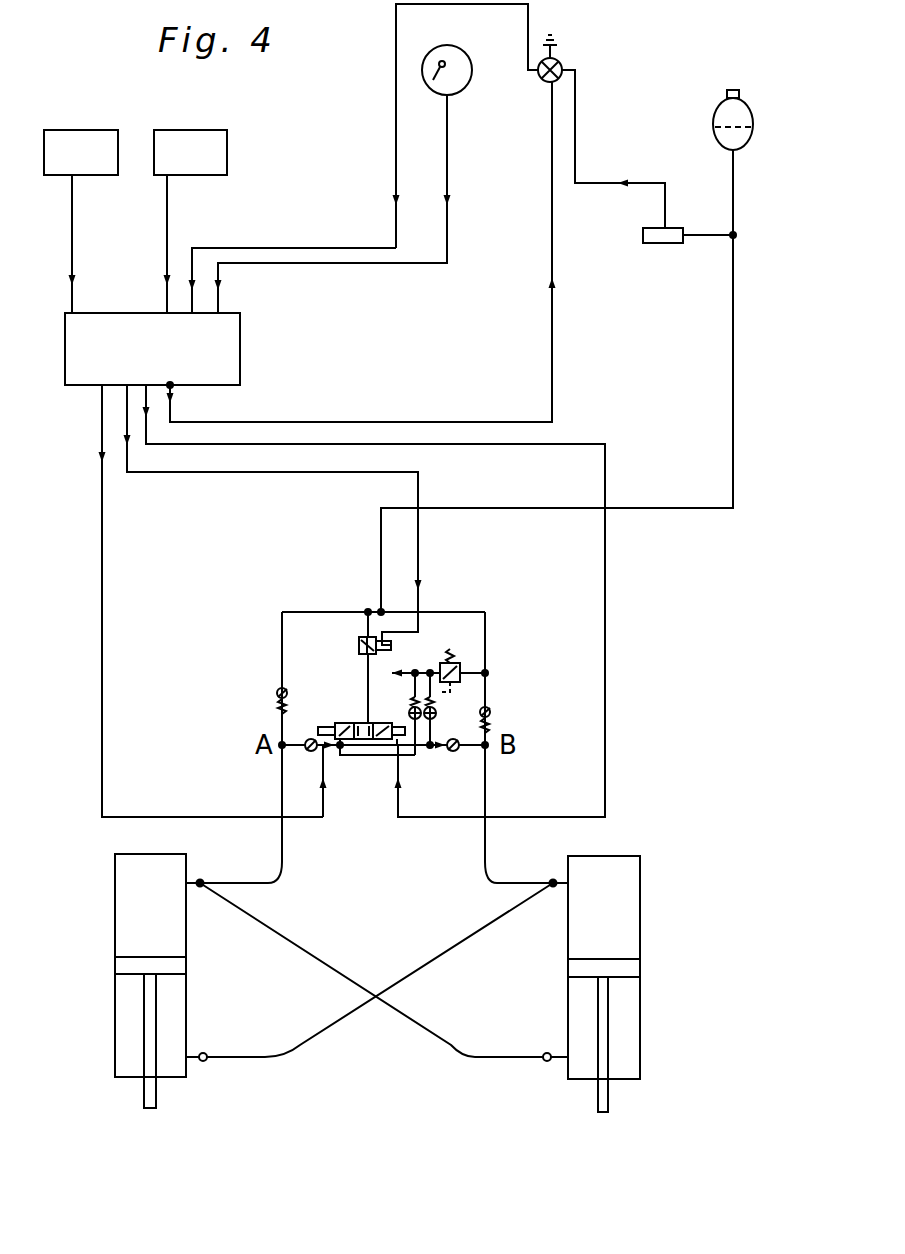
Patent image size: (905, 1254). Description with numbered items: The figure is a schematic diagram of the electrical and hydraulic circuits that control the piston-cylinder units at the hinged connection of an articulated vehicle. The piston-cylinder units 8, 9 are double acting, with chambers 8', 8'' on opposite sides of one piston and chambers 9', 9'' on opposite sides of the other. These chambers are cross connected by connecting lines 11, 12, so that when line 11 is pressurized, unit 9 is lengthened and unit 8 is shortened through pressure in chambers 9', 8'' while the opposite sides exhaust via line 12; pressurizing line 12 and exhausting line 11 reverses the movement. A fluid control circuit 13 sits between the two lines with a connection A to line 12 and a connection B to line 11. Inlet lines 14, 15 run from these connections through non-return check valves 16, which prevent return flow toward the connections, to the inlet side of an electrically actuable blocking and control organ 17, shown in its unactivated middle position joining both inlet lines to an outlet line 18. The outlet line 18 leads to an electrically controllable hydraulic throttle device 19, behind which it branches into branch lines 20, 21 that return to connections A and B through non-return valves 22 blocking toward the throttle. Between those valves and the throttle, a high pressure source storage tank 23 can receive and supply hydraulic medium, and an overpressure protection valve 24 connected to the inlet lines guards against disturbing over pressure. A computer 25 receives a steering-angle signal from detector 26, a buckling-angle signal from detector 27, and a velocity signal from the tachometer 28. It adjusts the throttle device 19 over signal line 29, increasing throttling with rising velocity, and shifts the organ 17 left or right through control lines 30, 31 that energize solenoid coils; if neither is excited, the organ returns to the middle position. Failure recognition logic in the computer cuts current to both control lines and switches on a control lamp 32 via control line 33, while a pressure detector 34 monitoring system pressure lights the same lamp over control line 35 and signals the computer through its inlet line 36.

The piston-cylinder unit 8 is at (123, 965).
The chamber 8' is at (150, 900).
The chamber 8'' is at (164, 1041).
The piston-cylinder unit 9 is at (635, 967).
The chamber 9' is at (604, 900).
The chamber 9'' is at (617, 1044).
The connecting line 11 is at (240, 1040).
The connecting line 12 is at (265, 921).
The fluid control circuit 13 is at (250, 607).
The inlet line 14 is at (300, 746).
The inlet line 15 is at (462, 748).
The non-return check valve 16 is at (311, 740).
The blocking and control organ 17 is at (356, 723).
The outlet line 18 is at (368, 678).
The hydraulic throttle device 19 is at (359, 647).
The branch line 20 is at (282, 660).
The branch line 21 is at (485, 660).
The non-return valve 22 is at (278, 698).
The high pressure source storage tank 23 is at (750, 116).
The overpressure protection valve 24 is at (457, 667).
The computer 25 is at (166, 365).
The detector 26 is at (91, 167).
The detector 27 is at (201, 167).
The tachometer 28 is at (471, 68).
The signal line 29 is at (264, 473).
The control line 30 is at (506, 445).
The control line 31 is at (102, 530).
The control lamp 32 is at (541, 80).
The control line 33 is at (438, 421).
The pressure detector 34 is at (643, 235).
The control line 35 is at (640, 183).
The inlet line 36 is at (283, 247).